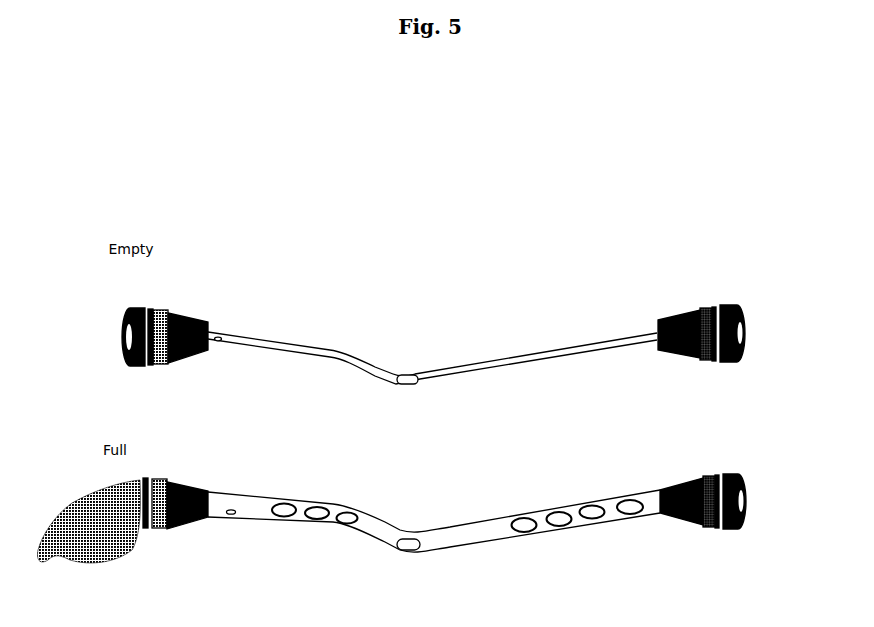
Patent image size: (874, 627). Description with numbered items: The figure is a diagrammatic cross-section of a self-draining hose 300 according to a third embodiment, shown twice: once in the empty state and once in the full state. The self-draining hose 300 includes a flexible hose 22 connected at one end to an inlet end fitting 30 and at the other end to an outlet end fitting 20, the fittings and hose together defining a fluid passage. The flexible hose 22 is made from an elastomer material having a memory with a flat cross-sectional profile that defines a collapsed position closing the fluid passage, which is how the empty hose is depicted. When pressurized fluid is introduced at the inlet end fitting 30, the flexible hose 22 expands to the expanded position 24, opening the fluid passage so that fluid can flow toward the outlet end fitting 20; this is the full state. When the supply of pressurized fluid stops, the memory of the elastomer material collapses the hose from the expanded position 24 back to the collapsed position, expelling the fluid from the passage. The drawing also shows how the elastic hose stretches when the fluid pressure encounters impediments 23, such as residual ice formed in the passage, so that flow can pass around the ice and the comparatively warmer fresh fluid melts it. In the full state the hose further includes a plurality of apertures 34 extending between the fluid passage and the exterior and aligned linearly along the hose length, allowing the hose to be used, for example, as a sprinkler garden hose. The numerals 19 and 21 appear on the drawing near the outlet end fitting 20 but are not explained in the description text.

The self-draining hose 300 is at (700, 160).
The end cap 19 is at (128, 309).
The outlet end fitting 20 is at (185, 312).
The ring 21 is at (160, 366).
The flexible hose 22 is at (467, 362).
The impediments 23 is at (400, 538).
The expanded position 24 is at (313, 500).
The inlet end fitting 30 is at (673, 318).
The apertures 34 is at (346, 524).